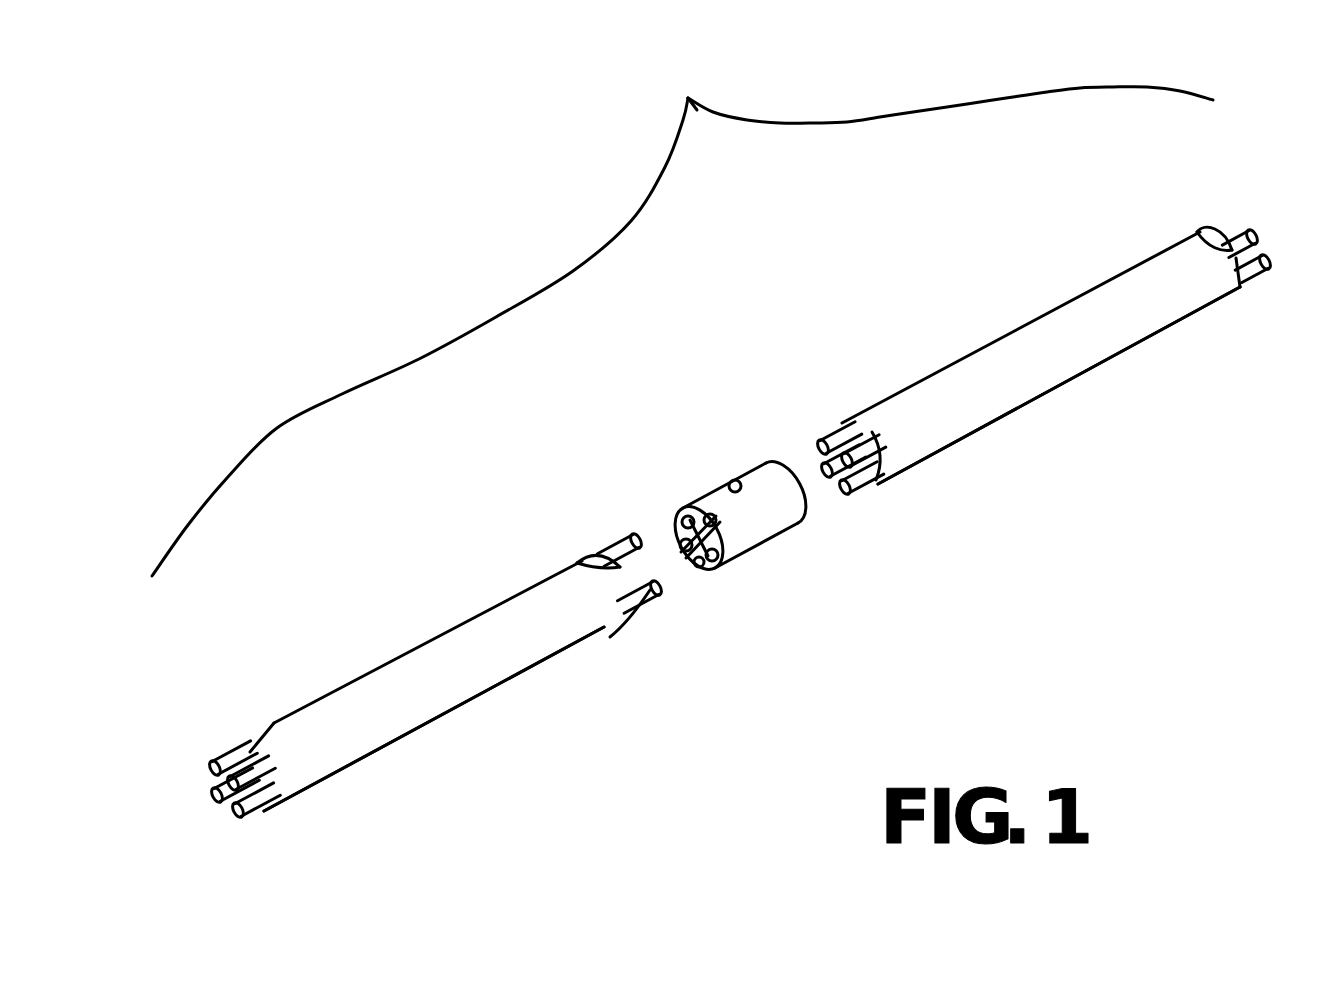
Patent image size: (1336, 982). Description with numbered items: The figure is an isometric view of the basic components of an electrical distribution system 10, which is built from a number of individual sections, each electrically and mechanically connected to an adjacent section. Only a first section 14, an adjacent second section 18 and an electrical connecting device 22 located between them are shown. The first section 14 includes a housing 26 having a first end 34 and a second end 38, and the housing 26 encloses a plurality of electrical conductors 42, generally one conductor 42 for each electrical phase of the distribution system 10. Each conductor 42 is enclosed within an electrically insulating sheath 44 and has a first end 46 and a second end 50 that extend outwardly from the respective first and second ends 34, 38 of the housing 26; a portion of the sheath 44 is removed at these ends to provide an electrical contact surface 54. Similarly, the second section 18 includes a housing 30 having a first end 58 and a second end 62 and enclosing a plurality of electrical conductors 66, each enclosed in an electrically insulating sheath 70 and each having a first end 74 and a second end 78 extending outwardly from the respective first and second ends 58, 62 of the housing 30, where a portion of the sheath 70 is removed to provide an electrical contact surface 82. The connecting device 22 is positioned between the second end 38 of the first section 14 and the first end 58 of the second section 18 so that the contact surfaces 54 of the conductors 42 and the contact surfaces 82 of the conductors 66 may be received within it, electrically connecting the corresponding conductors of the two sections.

The electrical distribution system 10 is at (682, 316).
The first section 14 is at (380, 709).
The second section 18 is at (1013, 371).
The electrical connecting device 22 is at (736, 528).
The housing 26 is at (509, 655).
The housing 30 is at (1100, 318).
The first end 34 is at (272, 778).
The second end 38 is at (577, 563).
The electrical conductor 42 is at (262, 805).
The electrically insulating sheath 44 is at (247, 772).
The first end 46 is at (213, 793).
The second end 50 is at (640, 572).
The electrical contact surface 54 is at (630, 573).
The first end 58 is at (886, 455).
The second end 62 is at (1197, 232).
The electrical conductor 66 is at (1247, 238).
The electrically insulating sheath 70 is at (858, 443).
The first end 74 is at (823, 447).
The second end 78 is at (1258, 241).
The electrical contact surface 82 is at (852, 477).